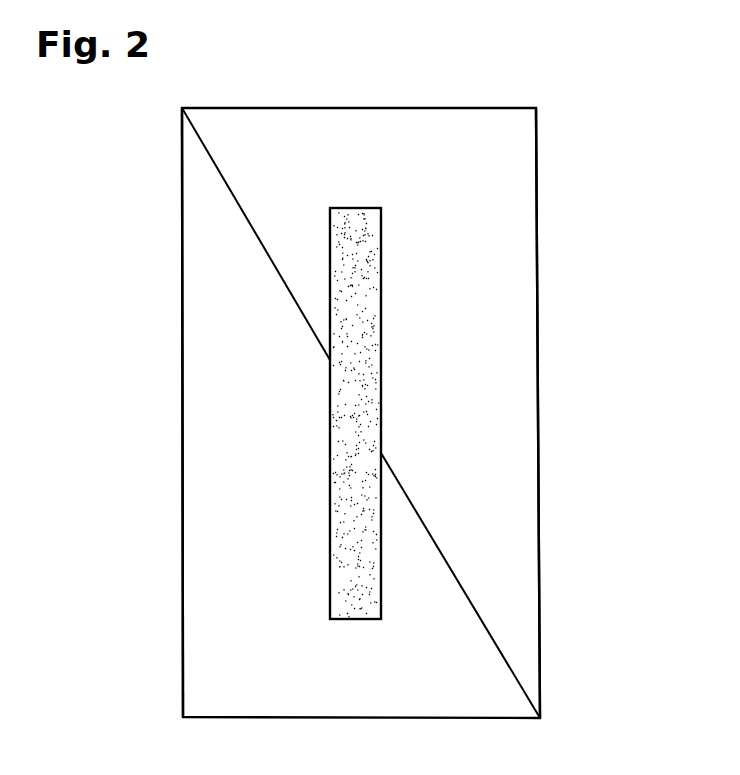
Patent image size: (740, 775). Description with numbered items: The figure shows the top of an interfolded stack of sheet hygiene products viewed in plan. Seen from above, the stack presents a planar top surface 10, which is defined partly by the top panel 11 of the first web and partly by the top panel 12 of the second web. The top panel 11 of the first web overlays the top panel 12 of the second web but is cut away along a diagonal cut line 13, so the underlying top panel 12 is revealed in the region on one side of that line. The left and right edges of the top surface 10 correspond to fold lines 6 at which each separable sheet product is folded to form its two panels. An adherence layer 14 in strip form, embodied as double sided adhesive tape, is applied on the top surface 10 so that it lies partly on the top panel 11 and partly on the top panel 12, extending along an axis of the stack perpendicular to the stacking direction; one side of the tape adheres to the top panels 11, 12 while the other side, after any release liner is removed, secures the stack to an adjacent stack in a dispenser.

The fold line 6 is at (182, 360).
The top surface 10 is at (551, 228).
The top panel of the first sheet 11 is at (270, 487).
The top panel of the second sheet 12 is at (473, 324).
The diagonal cut line 13 is at (222, 172).
The adherence layer 14 is at (353, 226).